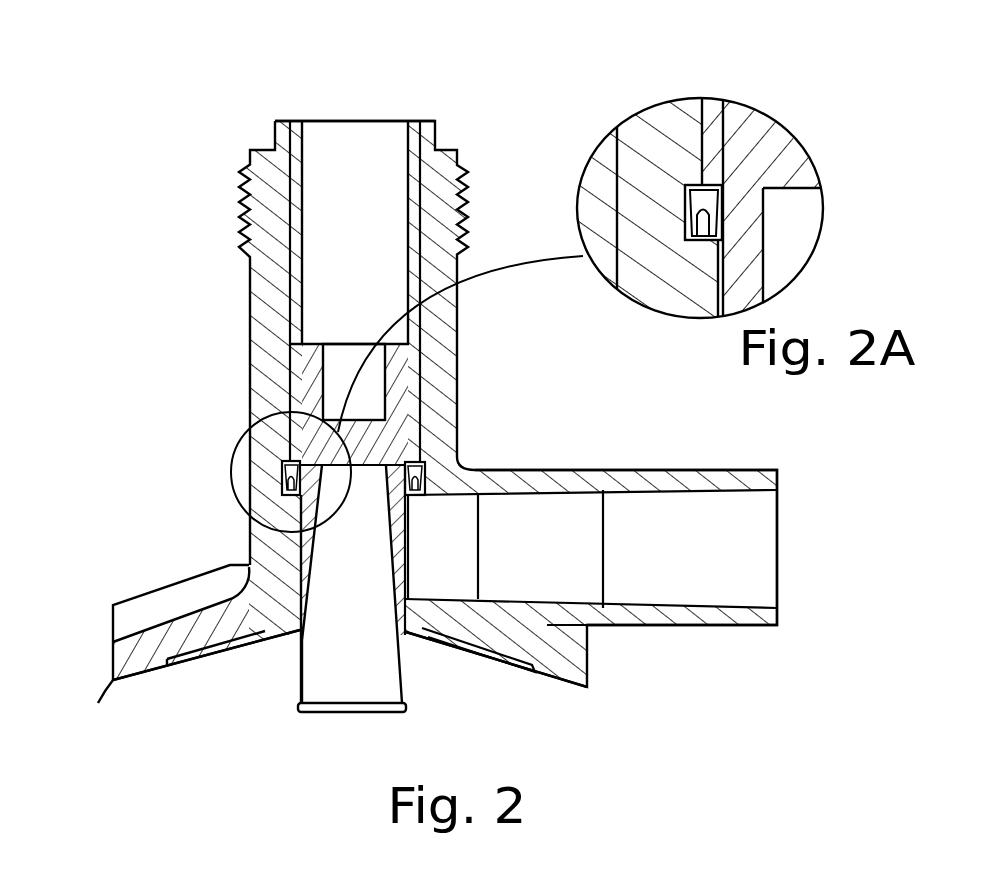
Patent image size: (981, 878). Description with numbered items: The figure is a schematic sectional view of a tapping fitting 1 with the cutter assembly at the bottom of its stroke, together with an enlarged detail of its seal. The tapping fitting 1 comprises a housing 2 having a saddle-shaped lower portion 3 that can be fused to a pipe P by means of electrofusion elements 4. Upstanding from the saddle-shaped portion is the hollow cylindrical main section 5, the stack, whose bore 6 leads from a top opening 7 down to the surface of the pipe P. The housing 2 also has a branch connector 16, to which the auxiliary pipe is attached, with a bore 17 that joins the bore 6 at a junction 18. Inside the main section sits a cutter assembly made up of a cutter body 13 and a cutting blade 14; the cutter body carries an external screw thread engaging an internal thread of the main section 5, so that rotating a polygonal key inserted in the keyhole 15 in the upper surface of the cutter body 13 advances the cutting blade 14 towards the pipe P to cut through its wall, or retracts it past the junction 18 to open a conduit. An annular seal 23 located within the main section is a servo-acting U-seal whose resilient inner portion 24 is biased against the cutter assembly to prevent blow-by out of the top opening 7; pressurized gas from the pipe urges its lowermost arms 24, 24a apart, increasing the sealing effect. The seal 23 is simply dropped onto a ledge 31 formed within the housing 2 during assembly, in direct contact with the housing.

In FIG. 2, the tapping fitting 1 is at (176, 316).
In FIG. 2, the housing 2 is at (247, 554).
In FIG. 2, the saddle-shaped lower portion 3 is at (122, 660).
In FIG. 2, the electrofusion elements 4 is at (217, 655).
In FIG. 2, the cylindrical main section 5 is at (250, 265).
In FIG. 2A, the cylindrical main section 5 is at (657, 125).
In FIG. 2, the bore 6 is at (336, 257).
In FIG. 2, the top opening 7 is at (366, 121).
In FIG. 2, the cutter body 13 is at (423, 398).
In FIG. 2A, the cutter body 13 is at (793, 163).
In FIG. 2, the cutting blade 14 is at (331, 646).
In FIG. 2, the keyhole 15 is at (331, 378).
In FIG. 2, the branch connector 16 is at (622, 467).
In FIG. 2, the bore 17 is at (522, 570).
In FIG. 2, the junction 18 is at (422, 542).
In FIG. 2, the annular seal 23 is at (282, 468).
In FIG. 2A, the annular seal 23 is at (684, 182).
In FIG. 2A, the resilient inner portion 24 is at (730, 216).
In FIG. 2A, the arm of the seal 24a is at (690, 212).
In FIG. 2A, the ledge 31 is at (715, 237).
In FIG. 2, the pipe P is at (565, 684).